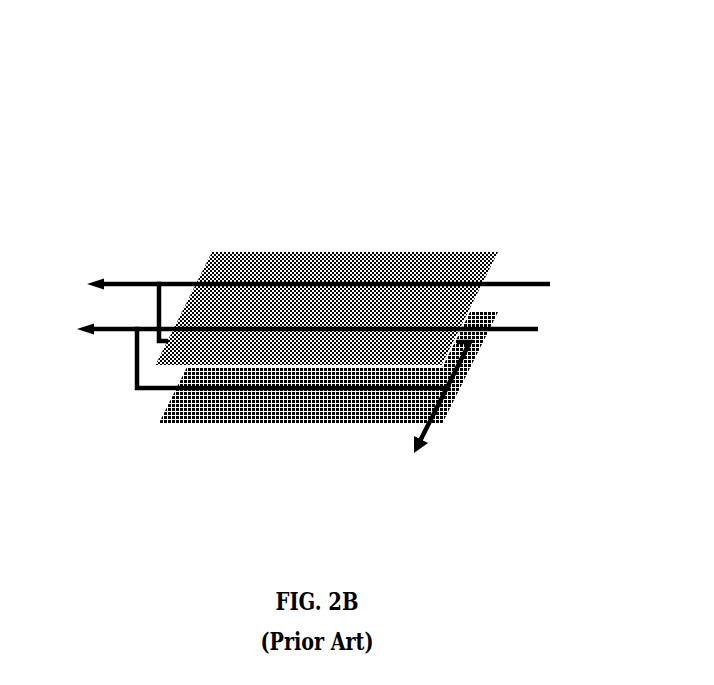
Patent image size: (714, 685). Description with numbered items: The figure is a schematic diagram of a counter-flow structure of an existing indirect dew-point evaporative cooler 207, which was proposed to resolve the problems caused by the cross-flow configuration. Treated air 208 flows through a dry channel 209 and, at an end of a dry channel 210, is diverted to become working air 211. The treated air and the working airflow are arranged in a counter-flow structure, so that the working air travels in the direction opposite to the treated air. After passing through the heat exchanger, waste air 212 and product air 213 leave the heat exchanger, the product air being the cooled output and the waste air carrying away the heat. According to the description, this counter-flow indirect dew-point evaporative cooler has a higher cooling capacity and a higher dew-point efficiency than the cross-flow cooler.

The counter-flow indirect dew-point evaporative cooler 207 is at (230, 96).
The treated air 208 is at (355, 310).
The dry channel 209 is at (348, 268).
The dry channel 210 is at (158, 393).
The working air 211 is at (273, 405).
The waste air 212 is at (440, 407).
The product air 213 is at (278, 312).